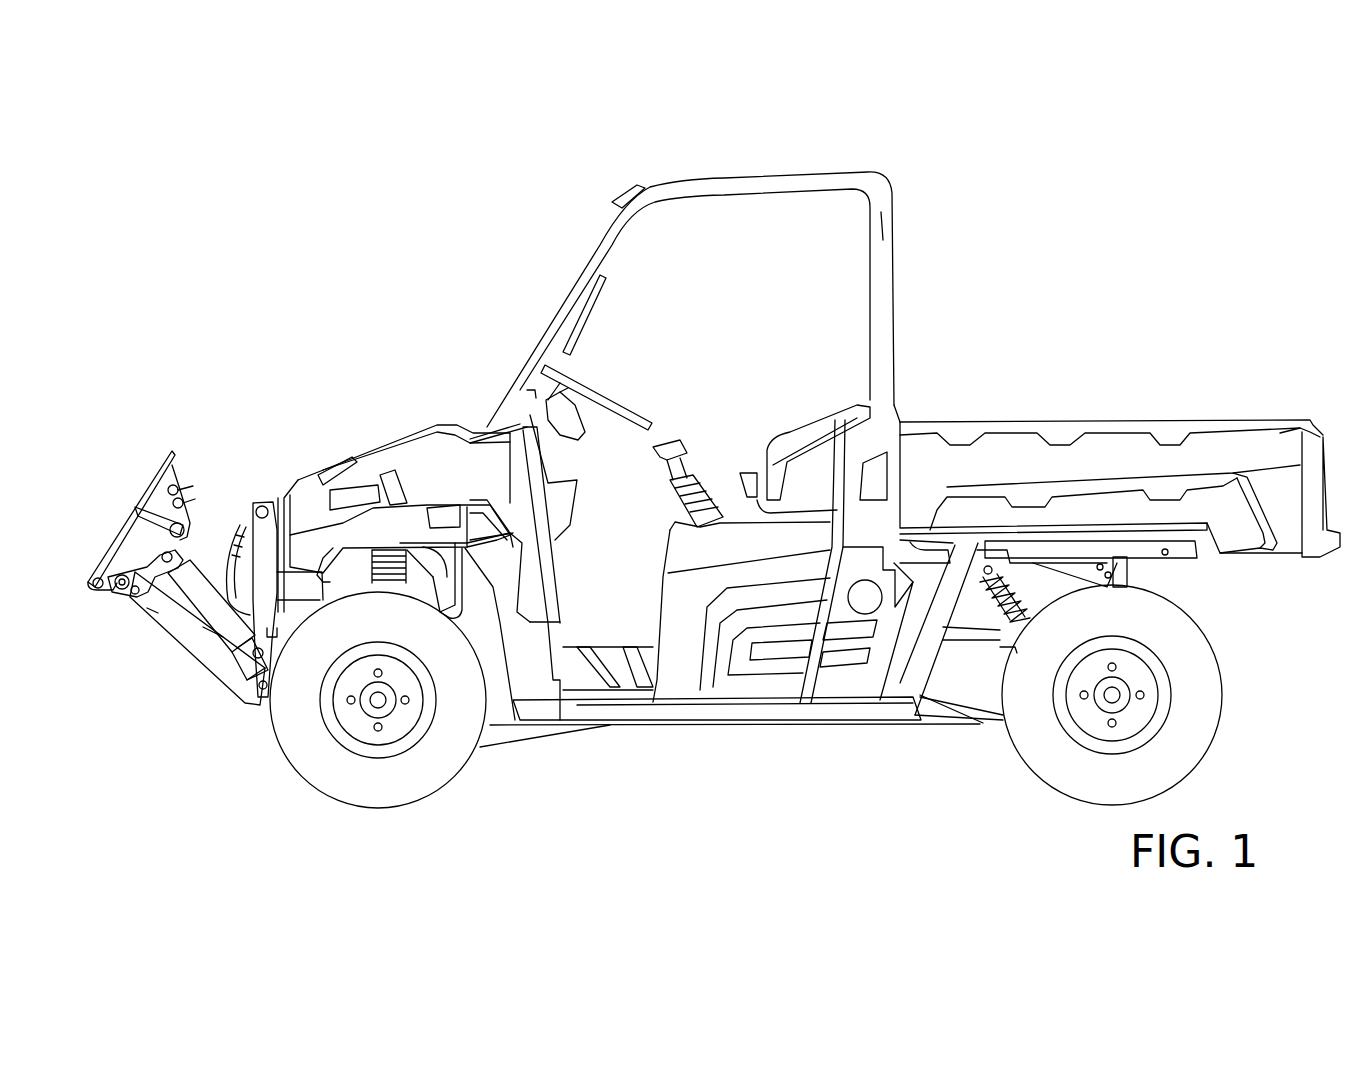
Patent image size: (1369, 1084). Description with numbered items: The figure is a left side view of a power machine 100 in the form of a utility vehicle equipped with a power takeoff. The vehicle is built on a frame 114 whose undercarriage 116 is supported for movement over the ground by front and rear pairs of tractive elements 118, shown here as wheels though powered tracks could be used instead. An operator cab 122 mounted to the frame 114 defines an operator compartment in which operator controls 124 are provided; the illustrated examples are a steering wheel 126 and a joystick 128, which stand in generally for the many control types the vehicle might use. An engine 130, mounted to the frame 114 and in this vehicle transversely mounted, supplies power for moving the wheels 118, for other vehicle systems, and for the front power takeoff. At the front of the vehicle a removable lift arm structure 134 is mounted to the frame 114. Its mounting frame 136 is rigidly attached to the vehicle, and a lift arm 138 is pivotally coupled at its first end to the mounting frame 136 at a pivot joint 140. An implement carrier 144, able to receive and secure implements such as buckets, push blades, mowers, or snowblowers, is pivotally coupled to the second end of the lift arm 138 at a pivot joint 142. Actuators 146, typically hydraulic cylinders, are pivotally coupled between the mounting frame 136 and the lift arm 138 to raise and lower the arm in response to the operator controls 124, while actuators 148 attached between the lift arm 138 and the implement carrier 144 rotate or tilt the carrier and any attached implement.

The power machine 100 is at (1048, 156).
The frame 114 is at (660, 750).
The undercarriage 116 is at (752, 722).
The tractive elements 118 is at (383, 787).
The operator cab 122 is at (752, 182).
The operator controls 124 is at (694, 345).
The steering wheel 126 is at (592, 382).
The joystick 128 is at (683, 447).
The engine 130 is at (858, 750).
The lift arm structure 134 is at (232, 378).
The mounting frame 136 is at (262, 492).
The lift arm 138 is at (215, 672).
The pivot joint 140 is at (247, 683).
The pivot joint 142 is at (137, 597).
The implement carrier 144 is at (158, 478).
The actuators 146 is at (247, 527).
The actuators 148 is at (195, 592).